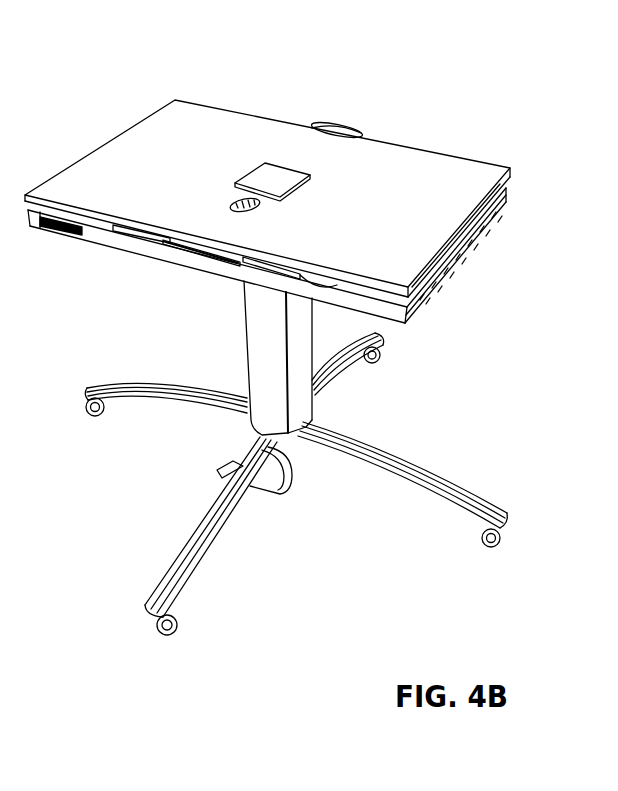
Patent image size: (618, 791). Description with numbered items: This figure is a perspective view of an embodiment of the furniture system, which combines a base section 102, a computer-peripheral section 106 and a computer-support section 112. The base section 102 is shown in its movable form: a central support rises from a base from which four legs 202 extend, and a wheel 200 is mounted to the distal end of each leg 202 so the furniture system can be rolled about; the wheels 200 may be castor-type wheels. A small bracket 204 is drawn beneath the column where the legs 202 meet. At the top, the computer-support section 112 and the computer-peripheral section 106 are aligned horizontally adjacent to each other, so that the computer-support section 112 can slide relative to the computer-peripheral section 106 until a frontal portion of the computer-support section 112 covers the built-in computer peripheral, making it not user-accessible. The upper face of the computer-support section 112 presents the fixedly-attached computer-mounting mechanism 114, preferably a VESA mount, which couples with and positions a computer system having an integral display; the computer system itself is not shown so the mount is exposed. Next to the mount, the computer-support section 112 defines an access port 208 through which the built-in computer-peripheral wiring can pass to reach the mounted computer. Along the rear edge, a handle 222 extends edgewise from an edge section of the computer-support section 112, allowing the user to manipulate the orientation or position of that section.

The base section 102 is at (318, 410).
The computer-peripheral section 106 is at (110, 243).
The computer-support section 112 is at (438, 160).
The fixedly-attached computer-mounting mechanism 114 is at (300, 183).
The wheels 200 is at (88, 420).
The legs 202 is at (148, 396).
The bracket 204 is at (287, 495).
The access port 208 is at (256, 207).
The handle 222 is at (343, 122).